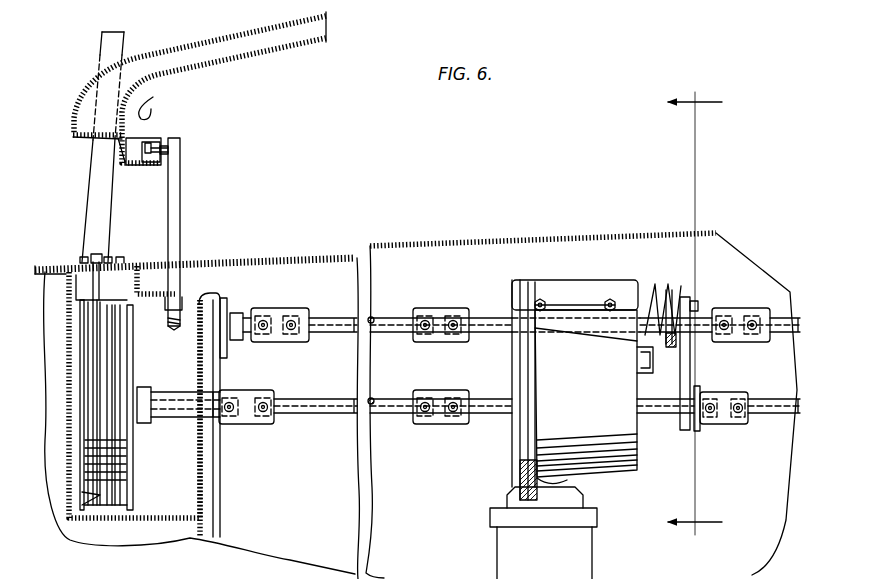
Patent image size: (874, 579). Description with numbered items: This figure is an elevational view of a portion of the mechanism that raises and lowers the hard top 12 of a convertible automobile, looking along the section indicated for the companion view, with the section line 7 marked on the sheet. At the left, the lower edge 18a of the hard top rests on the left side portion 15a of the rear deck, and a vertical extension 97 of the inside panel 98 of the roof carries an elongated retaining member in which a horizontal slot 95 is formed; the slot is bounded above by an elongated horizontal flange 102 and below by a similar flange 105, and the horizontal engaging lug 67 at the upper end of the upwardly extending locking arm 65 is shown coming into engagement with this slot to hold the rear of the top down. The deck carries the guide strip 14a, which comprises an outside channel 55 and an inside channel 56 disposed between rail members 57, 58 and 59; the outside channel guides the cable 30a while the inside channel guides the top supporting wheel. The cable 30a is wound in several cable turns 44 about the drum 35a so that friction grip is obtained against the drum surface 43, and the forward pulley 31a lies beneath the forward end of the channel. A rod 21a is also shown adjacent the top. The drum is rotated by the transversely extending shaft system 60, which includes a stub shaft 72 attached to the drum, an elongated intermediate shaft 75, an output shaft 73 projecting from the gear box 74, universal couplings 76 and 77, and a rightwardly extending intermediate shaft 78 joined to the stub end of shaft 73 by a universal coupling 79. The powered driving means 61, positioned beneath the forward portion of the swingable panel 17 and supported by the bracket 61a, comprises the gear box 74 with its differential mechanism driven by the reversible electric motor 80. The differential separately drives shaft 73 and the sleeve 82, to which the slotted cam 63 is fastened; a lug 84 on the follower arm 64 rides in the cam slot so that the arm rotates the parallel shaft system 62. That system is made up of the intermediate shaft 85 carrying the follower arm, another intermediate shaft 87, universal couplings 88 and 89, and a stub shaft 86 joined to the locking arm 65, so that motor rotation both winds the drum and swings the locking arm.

The hard top 12 is at (208, 36).
The left side lower edge of the hard top 18a is at (72, 137).
The control rod 21a is at (99, 150).
The vertical extension 97 is at (121, 155).
The inside panel 98 is at (160, 94).
The elongated horizontal flange 102 is at (155, 140).
The horizontal slot 95 is at (146, 162).
The horizontal engaging lug 67 is at (160, 149).
The flange beneath the slot 105 is at (173, 163).
The locking arm 65 is at (179, 210).
The guide strip 14a is at (140, 261).
The upwardly swingable panel 17 is at (282, 257).
The rail member 57 is at (82, 257).
The cable 30a is at (93, 256).
The rail member 58 is at (101, 257).
The inside channel 56 is at (108, 260).
The rail member 59 is at (122, 258).
The forward pulley 31a is at (73, 292).
The left side portion of the rear deck 15a is at (72, 272).
The outside channel 55 is at (101, 270).
The drum 35a is at (133, 458).
The drum surface 43 is at (118, 476).
The cable turns 44 is at (96, 497).
The stub shaft 72 is at (172, 391).
The universal coupling 76 is at (244, 425).
The elongated intermediate shaft 75 is at (318, 400).
The stub shaft 86 is at (226, 312).
The universal coupling 88 is at (282, 308).
The intermediate shaft 87 is at (326, 318).
The shaft system 60 is at (325, 433).
The shaft system 62 is at (388, 305).
The universal coupling 89 is at (440, 308).
The intermediate shaft 85 is at (488, 318).
The output shaft 73 is at (484, 400).
The universal coupling 77 is at (428, 426).
The bracket 61a is at (572, 298).
The gear box 74 is at (598, 391).
The powered driving means 61 is at (490, 461).
The electric motor 80 is at (498, 549).
The follower arm 64 is at (681, 290).
The slotted cam 63 is at (690, 376).
The lug 84 is at (698, 305).
The sleeve 82 is at (662, 420).
The universal coupling 79 is at (725, 425).
The intermediate shaft 78 is at (768, 416).
The section line 7- 7 is at (685, 313).